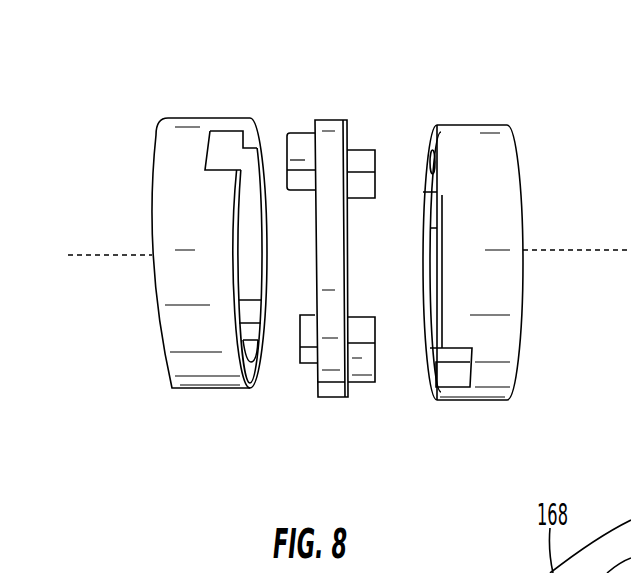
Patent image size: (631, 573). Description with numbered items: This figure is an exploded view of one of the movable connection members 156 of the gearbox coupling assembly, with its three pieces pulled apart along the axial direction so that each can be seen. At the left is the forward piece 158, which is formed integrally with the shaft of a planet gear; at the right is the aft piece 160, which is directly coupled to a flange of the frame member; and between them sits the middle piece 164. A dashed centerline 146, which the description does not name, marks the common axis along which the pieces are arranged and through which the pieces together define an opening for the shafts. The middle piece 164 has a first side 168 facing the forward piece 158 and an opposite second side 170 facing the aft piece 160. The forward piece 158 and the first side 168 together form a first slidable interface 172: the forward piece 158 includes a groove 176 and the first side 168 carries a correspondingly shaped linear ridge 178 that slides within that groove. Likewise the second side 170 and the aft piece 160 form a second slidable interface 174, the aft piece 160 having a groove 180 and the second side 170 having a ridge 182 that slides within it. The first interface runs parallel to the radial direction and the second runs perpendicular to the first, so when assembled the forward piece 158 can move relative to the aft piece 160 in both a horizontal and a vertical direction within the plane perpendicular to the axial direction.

The central axis 146 is at (97, 255).
The movable connection member 156 is at (455, 73).
The forward piece 158 is at (170, 248).
The aft piece 160 is at (488, 162).
The middle piece 164 is at (332, 133).
The first side 168 is at (280, 120).
The second side 170 is at (400, 400).
The first slidable interface 172 is at (275, 354).
The second slidable interface 174 is at (358, 322).
The groove 176 is at (222, 152).
The ridge 178 is at (301, 345).
The groove 180 is at (462, 372).
The ridge 182 is at (367, 177).